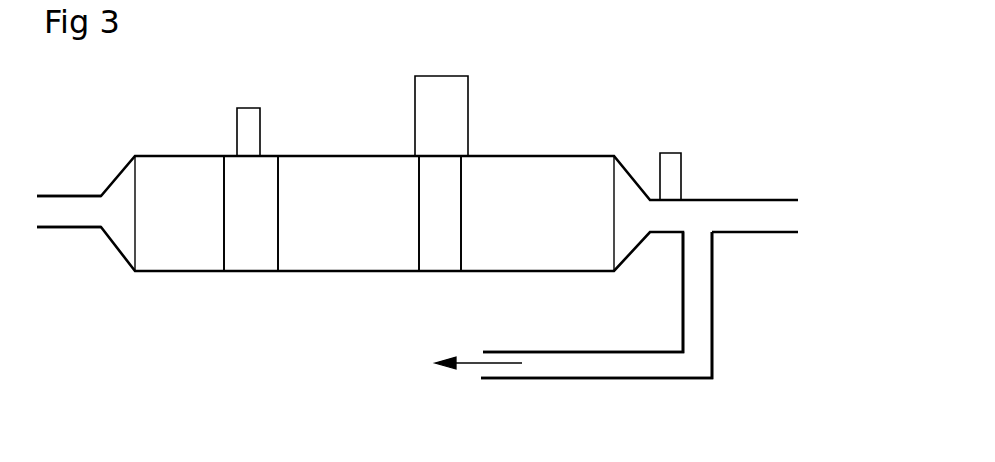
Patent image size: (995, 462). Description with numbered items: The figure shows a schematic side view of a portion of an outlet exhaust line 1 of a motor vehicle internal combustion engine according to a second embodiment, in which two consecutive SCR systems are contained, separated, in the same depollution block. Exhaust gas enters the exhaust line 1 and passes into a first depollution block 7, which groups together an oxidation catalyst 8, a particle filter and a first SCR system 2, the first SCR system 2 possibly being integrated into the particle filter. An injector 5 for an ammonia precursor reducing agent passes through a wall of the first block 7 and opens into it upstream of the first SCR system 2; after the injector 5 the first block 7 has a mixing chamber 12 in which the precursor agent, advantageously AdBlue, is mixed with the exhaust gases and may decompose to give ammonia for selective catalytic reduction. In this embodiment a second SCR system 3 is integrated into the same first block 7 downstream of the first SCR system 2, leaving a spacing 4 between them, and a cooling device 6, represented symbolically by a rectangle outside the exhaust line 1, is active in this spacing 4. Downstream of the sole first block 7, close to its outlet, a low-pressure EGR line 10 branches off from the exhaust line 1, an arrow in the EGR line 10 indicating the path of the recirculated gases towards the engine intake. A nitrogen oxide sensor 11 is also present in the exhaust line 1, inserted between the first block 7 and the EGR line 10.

The exhaust line 1 is at (68, 188).
The first SCR system 2 is at (357, 232).
The second SCR system 3 is at (535, 234).
The spacing 4 is at (432, 212).
The injector 5 is at (247, 122).
The cooling device 6 is at (456, 90).
The first depollution block 7 is at (359, 150).
The oxidation catalyst 8 is at (182, 238).
The low-pressure EGR line 10 is at (633, 367).
The nitrogen oxide sensor 11 is at (671, 166).
The mixing chamber 12 is at (253, 229).